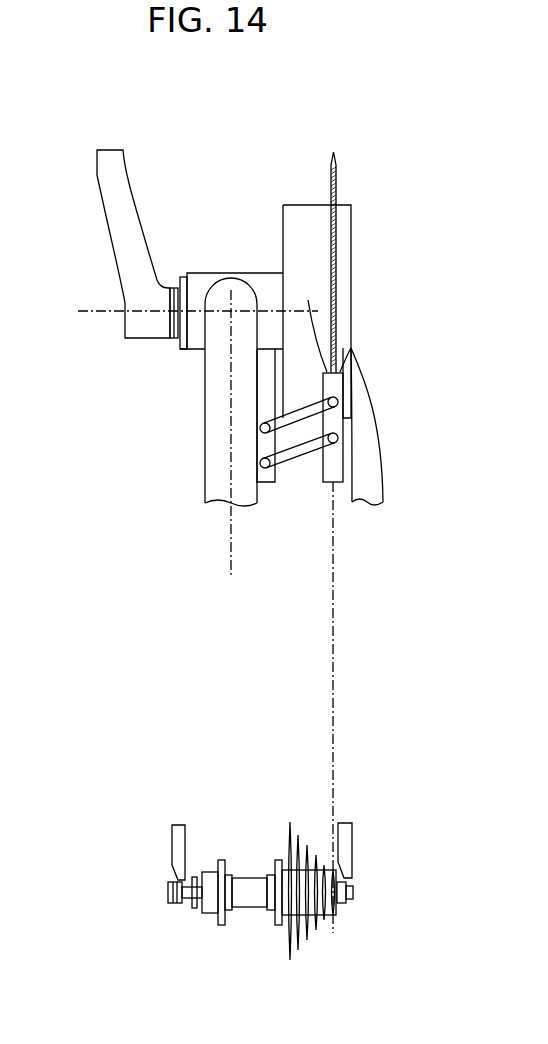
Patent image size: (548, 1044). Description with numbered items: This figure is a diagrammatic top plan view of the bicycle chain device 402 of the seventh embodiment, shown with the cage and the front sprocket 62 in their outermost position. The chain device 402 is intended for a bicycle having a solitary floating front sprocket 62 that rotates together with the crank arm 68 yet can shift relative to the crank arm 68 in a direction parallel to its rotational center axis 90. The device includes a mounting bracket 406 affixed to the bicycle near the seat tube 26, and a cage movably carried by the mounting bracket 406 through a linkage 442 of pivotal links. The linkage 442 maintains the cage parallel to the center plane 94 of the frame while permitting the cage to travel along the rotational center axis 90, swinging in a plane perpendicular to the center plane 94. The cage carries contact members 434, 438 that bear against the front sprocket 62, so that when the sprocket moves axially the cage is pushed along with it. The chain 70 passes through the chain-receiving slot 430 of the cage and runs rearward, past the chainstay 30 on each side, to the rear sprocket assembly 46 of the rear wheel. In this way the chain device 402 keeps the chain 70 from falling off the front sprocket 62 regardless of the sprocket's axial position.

The rotational center axis 90 is at (82, 310).
The front sprocket 62 is at (331, 190).
The contact member 434 is at (308, 324).
The contact member 438 is at (351, 348).
The mounting bracket 406 is at (262, 370).
The linkage 442 is at (262, 420).
The seat tube 26 is at (207, 488).
The chain-receiving slot 430 is at (327, 474).
The crank arm 68 is at (364, 490).
The center plane 94 is at (230, 571).
The bicycle chain device 402 is at (288, 550).
The chain 70 is at (332, 722).
The chainstay 30 is at (184, 840).
The rear sprocket assembly 46 is at (268, 968).